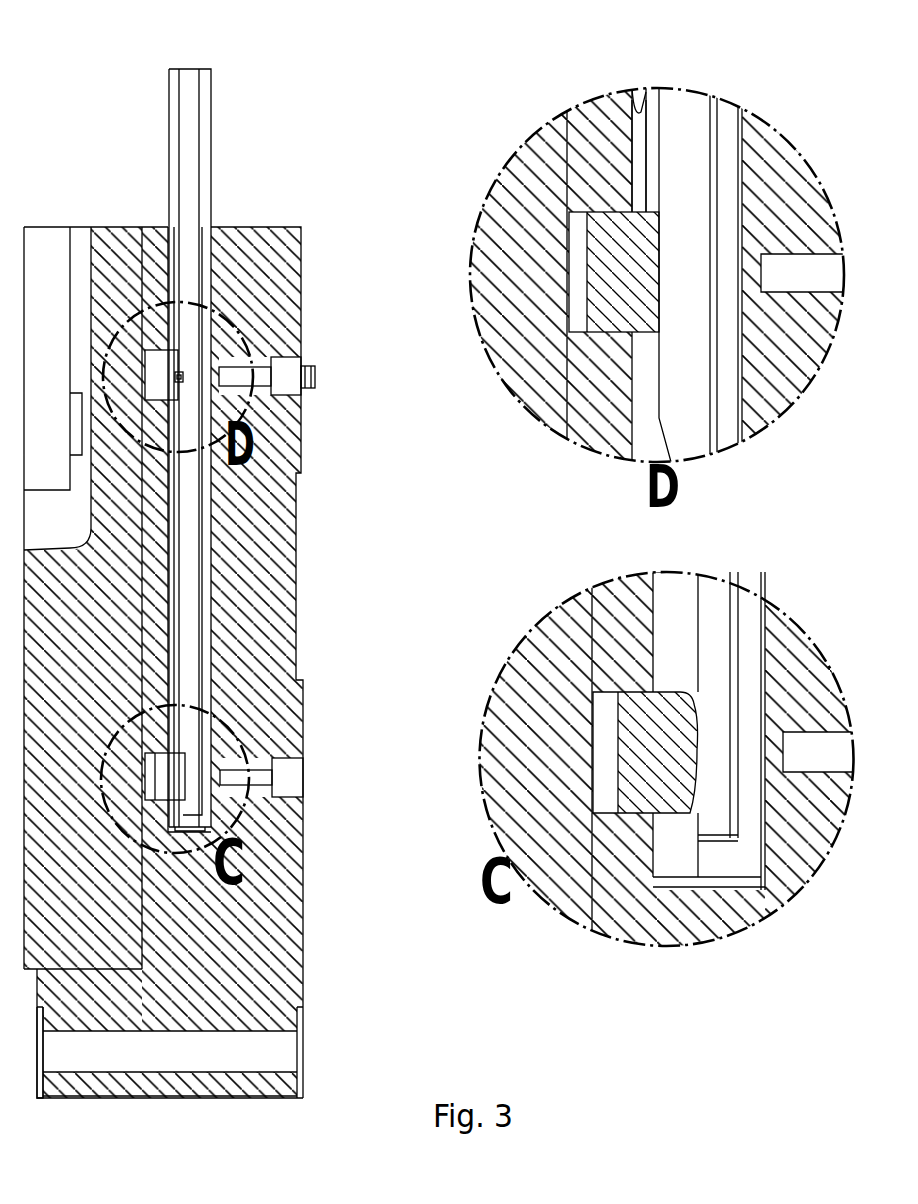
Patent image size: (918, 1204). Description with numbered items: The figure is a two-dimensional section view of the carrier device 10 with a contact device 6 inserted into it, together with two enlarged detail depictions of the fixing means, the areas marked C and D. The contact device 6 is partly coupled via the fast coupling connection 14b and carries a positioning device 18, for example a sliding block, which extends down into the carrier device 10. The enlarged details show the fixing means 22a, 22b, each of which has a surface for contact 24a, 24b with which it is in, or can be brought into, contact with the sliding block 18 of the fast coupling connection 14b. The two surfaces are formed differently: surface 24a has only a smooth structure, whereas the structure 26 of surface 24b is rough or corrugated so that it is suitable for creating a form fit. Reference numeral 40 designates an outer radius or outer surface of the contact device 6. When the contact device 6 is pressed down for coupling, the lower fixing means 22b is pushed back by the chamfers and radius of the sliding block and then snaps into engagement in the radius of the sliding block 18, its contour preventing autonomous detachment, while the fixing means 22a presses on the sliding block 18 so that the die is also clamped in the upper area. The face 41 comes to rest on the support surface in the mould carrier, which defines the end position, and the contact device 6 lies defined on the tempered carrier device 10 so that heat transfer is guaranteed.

The fast coupling connection 14b is at (195, 144).
The positioning device 18 is at (202, 571).
The fixing means 22a is at (176, 352).
The fixing means 22b is at (160, 780).
The surface for contact 24a is at (659, 235).
The surface for contact 24b is at (695, 720).
The structure 26 is at (693, 755).
The outer surface 40 is at (143, 956).
The face 41 is at (58, 972).
The contact device 6 is at (100, 943).
The carrier device 10 is at (255, 1000).